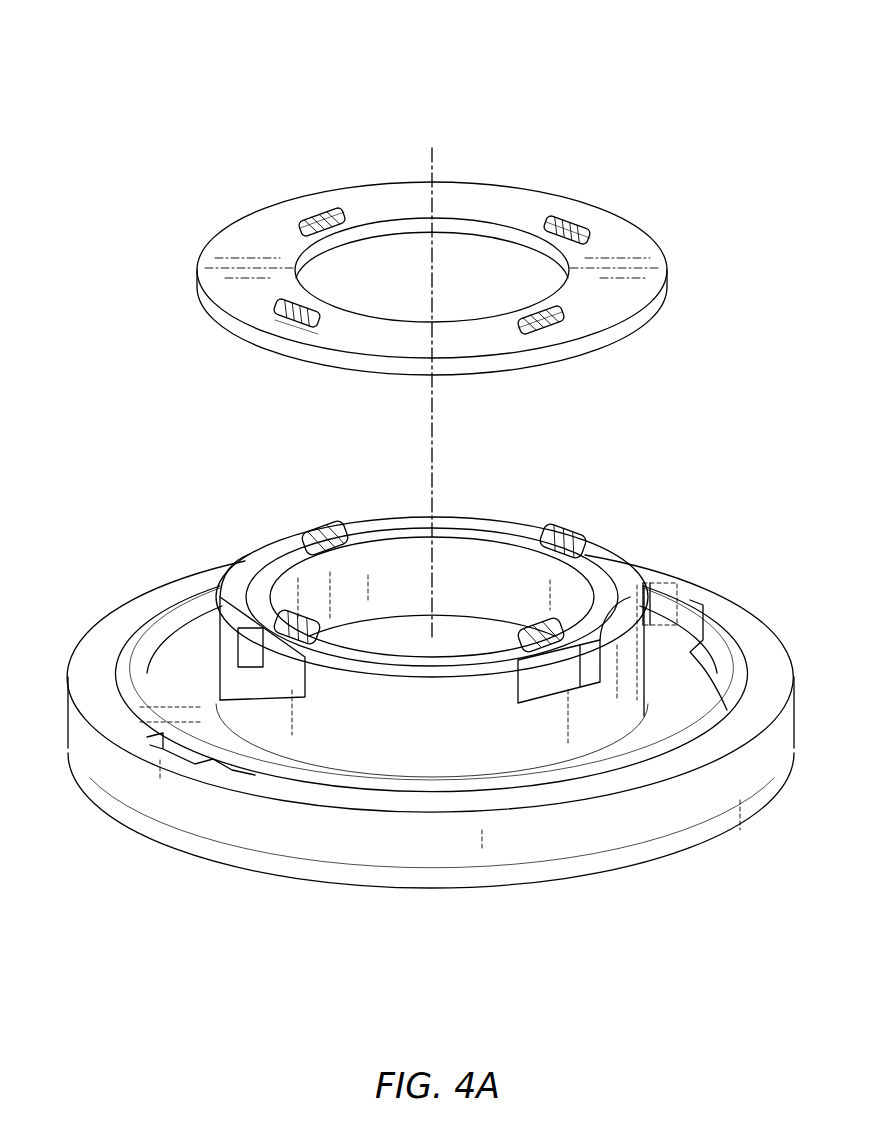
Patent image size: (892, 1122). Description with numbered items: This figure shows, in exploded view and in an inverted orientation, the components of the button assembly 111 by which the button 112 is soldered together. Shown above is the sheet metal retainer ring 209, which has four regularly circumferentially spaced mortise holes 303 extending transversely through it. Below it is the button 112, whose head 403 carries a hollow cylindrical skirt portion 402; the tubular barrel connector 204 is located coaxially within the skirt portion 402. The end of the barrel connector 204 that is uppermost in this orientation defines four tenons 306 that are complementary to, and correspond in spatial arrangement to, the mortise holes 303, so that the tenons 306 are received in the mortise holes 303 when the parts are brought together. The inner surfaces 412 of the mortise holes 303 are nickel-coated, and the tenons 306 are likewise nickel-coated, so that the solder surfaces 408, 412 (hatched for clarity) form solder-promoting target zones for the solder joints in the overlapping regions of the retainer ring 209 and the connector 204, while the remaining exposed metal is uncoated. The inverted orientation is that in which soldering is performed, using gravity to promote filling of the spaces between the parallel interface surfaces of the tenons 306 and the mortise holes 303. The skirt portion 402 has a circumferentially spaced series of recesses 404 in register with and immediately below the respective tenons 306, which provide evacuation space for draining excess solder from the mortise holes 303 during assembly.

The button assembly 111 is at (297, 70).
The button 112 is at (233, 905).
The retainer ring 209 is at (645, 290).
The mortise holes 303 is at (317, 298).
The inner surfaces of the mortise holes 412 is at (296, 232).
The barrel connector 204 is at (500, 540).
The tenons 306 is at (318, 520).
The solder surfaces 408 is at (362, 557).
The skirt portion 402 is at (627, 663).
The recesses 404 is at (320, 696).
The head 403 is at (627, 822).